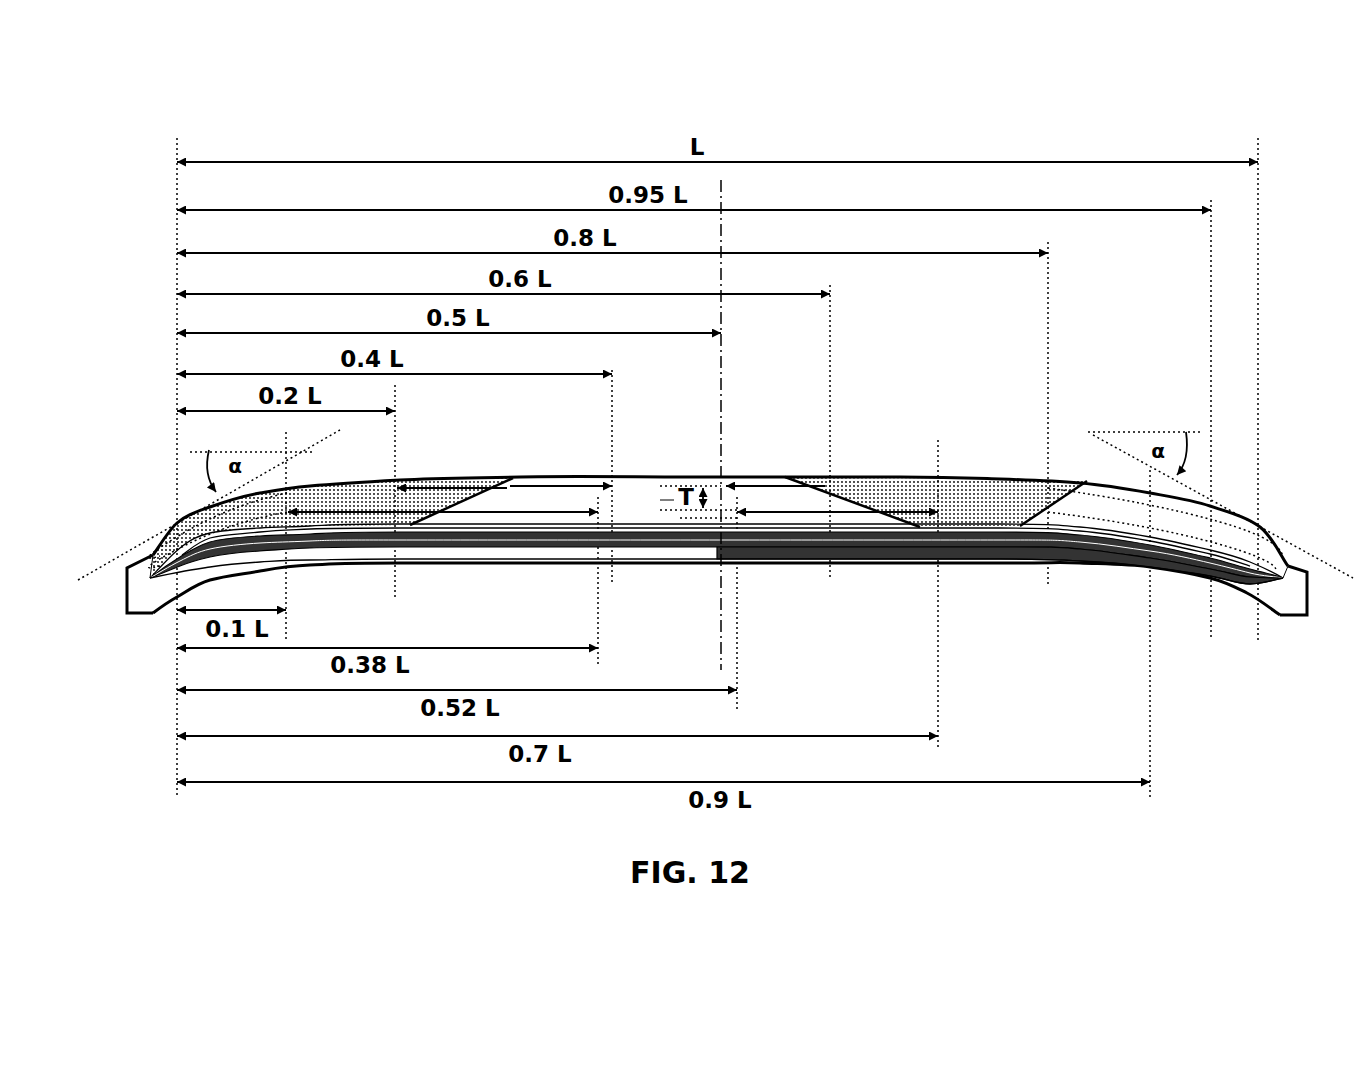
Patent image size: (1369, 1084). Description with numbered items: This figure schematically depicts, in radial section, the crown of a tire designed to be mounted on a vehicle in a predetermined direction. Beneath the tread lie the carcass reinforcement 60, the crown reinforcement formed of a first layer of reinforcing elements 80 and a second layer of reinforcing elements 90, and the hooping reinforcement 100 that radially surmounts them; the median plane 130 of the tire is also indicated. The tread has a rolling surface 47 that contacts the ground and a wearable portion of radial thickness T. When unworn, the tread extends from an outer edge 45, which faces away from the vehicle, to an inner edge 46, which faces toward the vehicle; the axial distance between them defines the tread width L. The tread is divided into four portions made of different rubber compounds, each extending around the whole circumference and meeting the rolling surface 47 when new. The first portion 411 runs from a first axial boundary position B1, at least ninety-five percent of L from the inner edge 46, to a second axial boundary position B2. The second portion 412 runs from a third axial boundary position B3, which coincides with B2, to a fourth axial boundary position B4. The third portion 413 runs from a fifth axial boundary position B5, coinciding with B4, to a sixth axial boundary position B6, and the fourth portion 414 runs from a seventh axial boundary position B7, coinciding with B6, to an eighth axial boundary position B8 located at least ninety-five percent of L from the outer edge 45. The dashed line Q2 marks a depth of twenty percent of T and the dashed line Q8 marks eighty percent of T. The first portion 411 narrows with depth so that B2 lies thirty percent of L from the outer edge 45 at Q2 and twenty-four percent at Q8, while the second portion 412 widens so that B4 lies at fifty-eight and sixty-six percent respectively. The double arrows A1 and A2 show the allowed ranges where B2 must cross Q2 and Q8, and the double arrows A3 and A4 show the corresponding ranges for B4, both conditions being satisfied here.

The outer edge 45 is at (176, 519).
The inner edge 46 is at (1262, 520).
The rolling surface 47 is at (597, 476).
The carcass reinforcement 60 is at (337, 543).
The first layer of reinforcing elements 80 is at (300, 562).
The second layer of reinforcing elements 90 is at (400, 540).
The hooping reinforcement 100 is at (573, 530).
The median plane 130 is at (721, 634).
The first portion 411 is at (320, 487).
The second portion 412 is at (667, 503).
The third portion 413 is at (957, 493).
The fourth portion 414 is at (1173, 503).
The double arrow A1 is at (540, 484).
The double arrow A2 is at (523, 515).
The double arrow A3 is at (768, 484).
The double arrow A4 is at (858, 513).
The first axial boundary position B1 is at (157, 546).
The second axial boundary position B2 is at (447, 504).
The third axial boundary position B3 is at (477, 503).
The fourth axial boundary position B4 is at (823, 487).
The fifth axial boundary position B5 is at (865, 502).
The sixth axial boundary position B6 is at (1037, 508).
The seventh axial boundary position B7 is at (1057, 507).
The eighth axial boundary position B8 is at (1270, 543).
The dashed line Q2 is at (1220, 507).
The dashed line Q8 is at (667, 500).